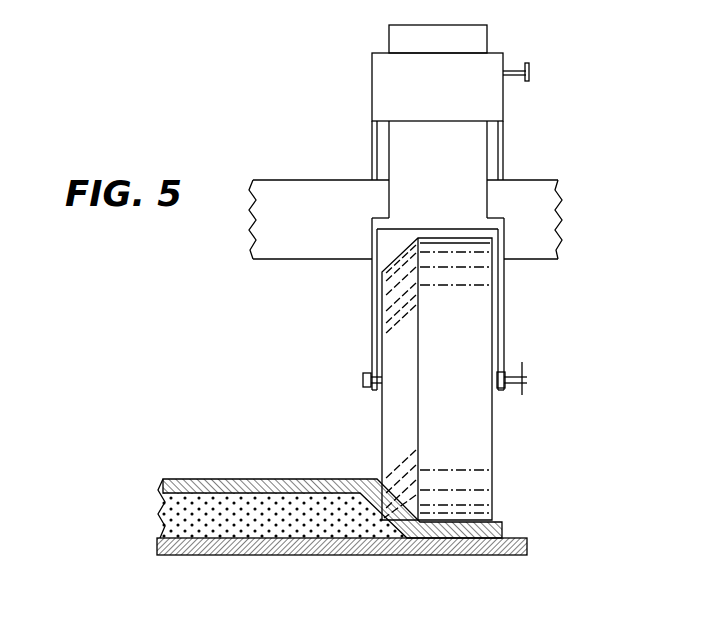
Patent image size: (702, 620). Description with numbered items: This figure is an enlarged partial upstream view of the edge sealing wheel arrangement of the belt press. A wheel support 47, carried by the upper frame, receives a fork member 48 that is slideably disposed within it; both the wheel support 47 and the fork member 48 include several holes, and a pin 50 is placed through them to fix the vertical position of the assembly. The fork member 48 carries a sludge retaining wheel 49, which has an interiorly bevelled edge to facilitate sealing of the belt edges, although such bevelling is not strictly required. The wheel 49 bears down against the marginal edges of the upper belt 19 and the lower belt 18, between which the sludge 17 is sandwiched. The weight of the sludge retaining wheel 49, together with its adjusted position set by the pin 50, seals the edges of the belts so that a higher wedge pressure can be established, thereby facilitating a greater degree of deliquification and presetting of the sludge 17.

The sludge 17 is at (222, 503).
The lower belt 18 is at (322, 550).
The upper belt 19 is at (298, 479).
The wheel support 47 is at (380, 95).
The fork member 48 is at (460, 190).
The sludge retaining wheel 49 is at (468, 457).
The pin 50 is at (515, 78).